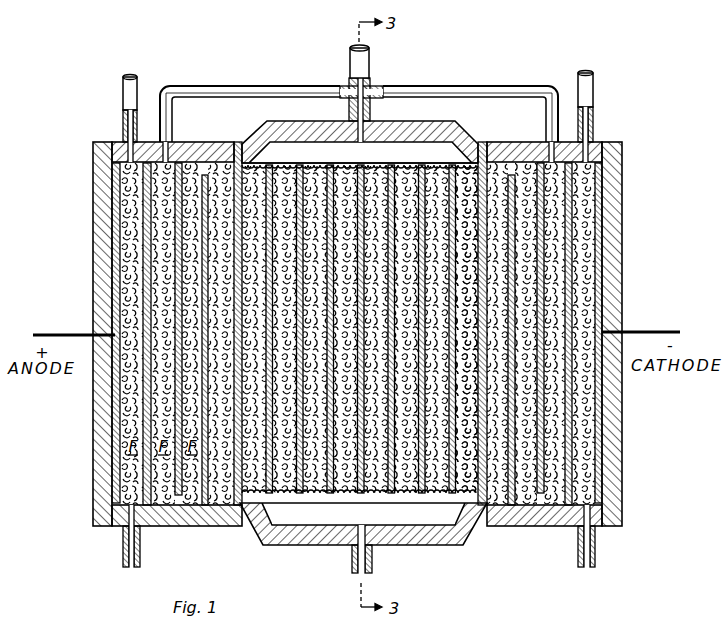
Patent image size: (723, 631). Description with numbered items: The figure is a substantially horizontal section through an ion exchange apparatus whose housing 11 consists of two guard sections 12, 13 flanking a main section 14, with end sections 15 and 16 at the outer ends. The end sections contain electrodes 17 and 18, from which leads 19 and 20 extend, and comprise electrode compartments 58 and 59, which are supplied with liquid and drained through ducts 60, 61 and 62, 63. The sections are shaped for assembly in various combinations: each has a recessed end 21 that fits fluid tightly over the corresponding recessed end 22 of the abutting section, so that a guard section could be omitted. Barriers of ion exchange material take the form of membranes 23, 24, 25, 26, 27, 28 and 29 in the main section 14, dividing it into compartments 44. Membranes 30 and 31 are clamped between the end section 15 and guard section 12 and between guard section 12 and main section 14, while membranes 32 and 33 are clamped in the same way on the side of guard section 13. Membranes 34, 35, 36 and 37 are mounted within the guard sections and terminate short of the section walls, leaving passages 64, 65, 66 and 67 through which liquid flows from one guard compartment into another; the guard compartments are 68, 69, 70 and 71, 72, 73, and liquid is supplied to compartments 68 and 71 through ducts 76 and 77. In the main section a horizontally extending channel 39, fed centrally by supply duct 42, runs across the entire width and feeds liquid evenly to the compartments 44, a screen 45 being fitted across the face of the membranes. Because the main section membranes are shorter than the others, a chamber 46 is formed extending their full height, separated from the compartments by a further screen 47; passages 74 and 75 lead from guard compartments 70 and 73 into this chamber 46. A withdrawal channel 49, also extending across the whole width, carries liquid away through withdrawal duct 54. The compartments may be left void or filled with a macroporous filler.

The housing 11 is at (361, 318).
The guard section 12 is at (212, 142).
The guard section 13 is at (532, 142).
The main section 14 is at (414, 121).
The end section 15 is at (99, 473).
The end section 16 is at (610, 230).
The electrode 17 is at (120, 284).
The electrode 18 is at (594, 306).
The lead 19 is at (64, 334).
The lead 20 is at (650, 331).
The recessed end 21 is at (358, 304).
The recessed end 22 is at (360, 329).
The membrane 23 is at (272, 284).
The membrane 24 is at (302, 284).
The membrane 25 is at (332, 284).
The membrane 26 is at (362, 284).
The membrane 27 is at (394, 284).
The membrane 28 is at (424, 284).
The membrane 29 is at (455, 284).
The membrane 30 is at (149, 405).
The membrane 31 is at (233, 406).
The membrane 32 is at (566, 405).
The membrane 33 is at (484, 405).
The membrane 34 is at (188, 329).
The membrane 35 is at (218, 340).
The membrane 36 is at (550, 330).
The membrane 37 is at (512, 340).
The channel 39 is at (390, 157).
The supply duct 42 is at (366, 65).
The compartment 44 is at (360, 329).
The screen 45 is at (311, 165).
The chamber 46 is at (275, 504).
The screen 47 is at (300, 497).
The withdrawal channel 49 is at (385, 524).
The withdrawal duct 54 is at (351, 563).
The electrode compartment 58 is at (121, 421).
The electrode compartment 59 is at (590, 433).
The duct 60 is at (130, 76).
The duct 61 is at (122, 553).
The duct 62 is at (587, 73).
The duct 63 is at (597, 548).
The passage 64 is at (182, 496).
The passage 65 is at (218, 340).
The passage 66 is at (541, 498).
The passage 67 is at (510, 340).
The guard compartment 68 is at (156, 344).
The guard compartment 69 is at (183, 344).
The guard compartment 70 is at (211, 344).
The guard compartment 71 is at (545, 342).
The guard compartment 72 is at (516, 342).
The guard compartment 73 is at (490, 342).
The passage 74 is at (228, 498).
The passage 75 is at (486, 501).
The duct 76 is at (260, 86).
The duct 77 is at (446, 86).